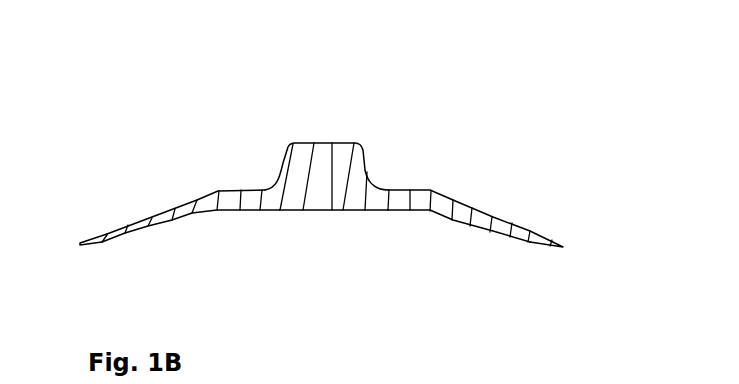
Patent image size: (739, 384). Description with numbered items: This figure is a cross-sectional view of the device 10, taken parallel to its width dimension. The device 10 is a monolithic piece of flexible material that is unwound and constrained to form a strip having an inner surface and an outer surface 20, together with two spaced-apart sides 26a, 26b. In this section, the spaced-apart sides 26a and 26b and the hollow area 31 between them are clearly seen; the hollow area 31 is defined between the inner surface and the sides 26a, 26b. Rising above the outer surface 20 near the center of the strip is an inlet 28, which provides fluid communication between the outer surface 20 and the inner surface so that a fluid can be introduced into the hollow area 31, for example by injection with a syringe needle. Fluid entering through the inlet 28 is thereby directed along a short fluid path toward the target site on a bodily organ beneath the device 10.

The device 10 is at (575, 88).
The outer surface 20 is at (167, 200).
The first side 26a is at (115, 217).
The second side 26b is at (522, 216).
The inlet 28 is at (323, 135).
The hollow area 31 is at (389, 222).